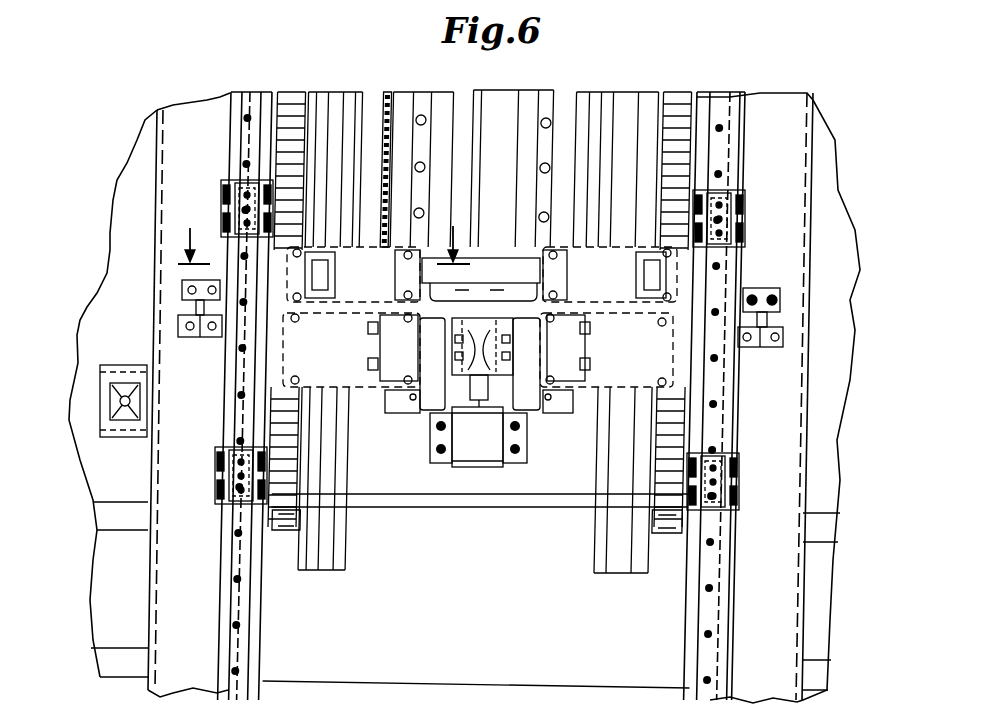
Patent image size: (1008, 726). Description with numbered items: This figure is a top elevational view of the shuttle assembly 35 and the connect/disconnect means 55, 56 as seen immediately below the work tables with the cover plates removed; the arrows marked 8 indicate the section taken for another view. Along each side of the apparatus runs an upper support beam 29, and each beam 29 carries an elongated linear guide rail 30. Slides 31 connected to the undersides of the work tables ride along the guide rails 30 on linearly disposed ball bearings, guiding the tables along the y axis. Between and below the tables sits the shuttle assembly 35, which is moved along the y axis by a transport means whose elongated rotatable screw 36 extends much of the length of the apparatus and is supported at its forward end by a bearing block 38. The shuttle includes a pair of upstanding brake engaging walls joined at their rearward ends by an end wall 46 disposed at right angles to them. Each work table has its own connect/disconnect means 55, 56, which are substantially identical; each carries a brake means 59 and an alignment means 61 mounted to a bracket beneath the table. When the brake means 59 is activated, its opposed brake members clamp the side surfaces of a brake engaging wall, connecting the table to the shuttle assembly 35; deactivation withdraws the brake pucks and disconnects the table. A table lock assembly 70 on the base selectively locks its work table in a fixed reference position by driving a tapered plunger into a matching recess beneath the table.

The section line 8- 8 is at (324, 227).
The upper support beam 29 is at (162, 582).
The linear guide rail 30 is at (718, 346).
The slide 31 is at (747, 220).
The shuttle assembly 35 is at (474, 339).
The screw 36 is at (483, 147).
The bearing block 38 is at (474, 438).
The end wall 46 is at (503, 267).
The connect/disconnect means 55 is at (300, 358).
The connect/disconnect means 56 is at (650, 355).
The brake means 59 is at (460, 362).
The alignment means 61 is at (300, 250).
The table lock assembly 70 is at (105, 366).